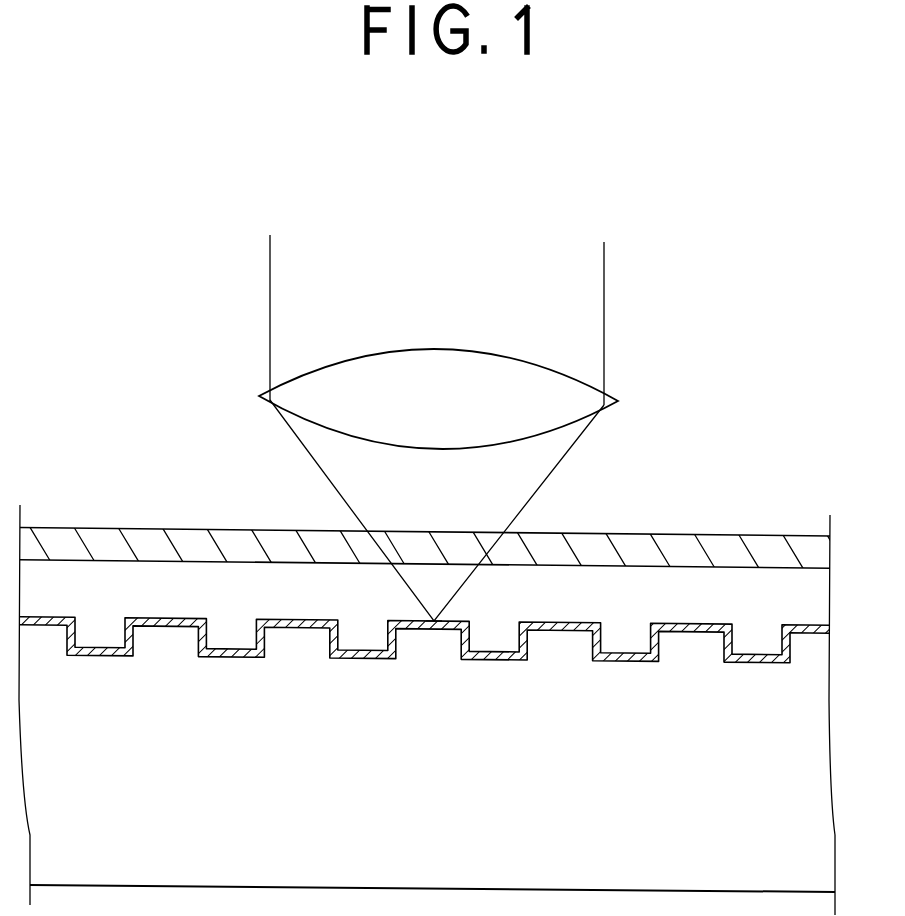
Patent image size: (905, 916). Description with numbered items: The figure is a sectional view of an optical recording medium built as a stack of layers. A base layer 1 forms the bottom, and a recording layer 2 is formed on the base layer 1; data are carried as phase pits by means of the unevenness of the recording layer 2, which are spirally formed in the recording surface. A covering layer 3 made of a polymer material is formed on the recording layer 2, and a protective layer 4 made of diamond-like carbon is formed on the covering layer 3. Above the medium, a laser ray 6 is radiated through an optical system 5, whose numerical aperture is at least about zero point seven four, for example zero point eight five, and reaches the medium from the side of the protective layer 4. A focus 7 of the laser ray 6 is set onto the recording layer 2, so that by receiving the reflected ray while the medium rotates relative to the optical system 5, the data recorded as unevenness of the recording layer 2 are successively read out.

The base layer 1 is at (822, 758).
The recording layer 2 is at (825, 628).
The covering layer 3 is at (824, 590).
The protective layer 4 is at (825, 552).
The optical system 5 is at (618, 401).
The laser ray 6 is at (595, 297).
The focus 7 is at (433, 630).